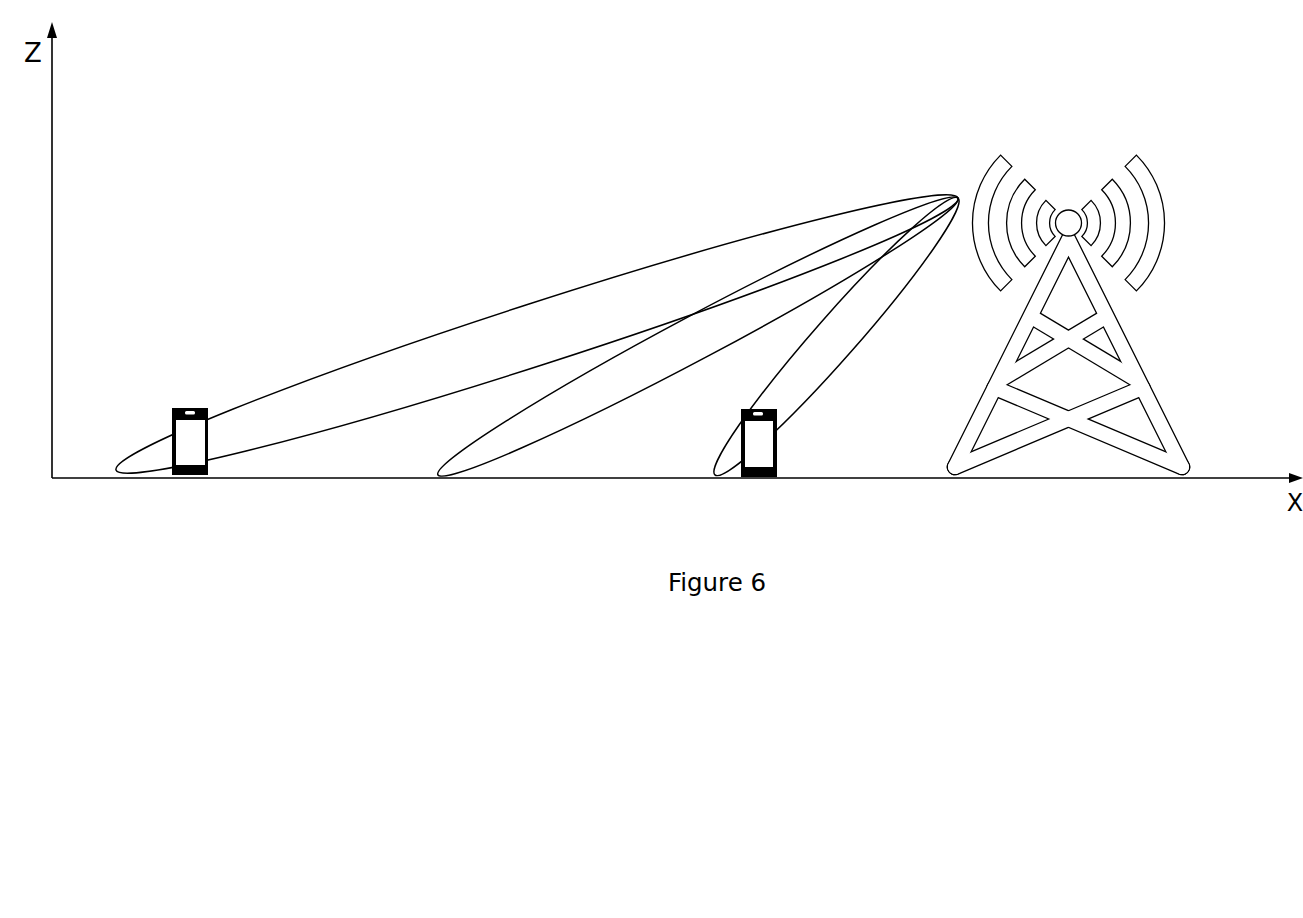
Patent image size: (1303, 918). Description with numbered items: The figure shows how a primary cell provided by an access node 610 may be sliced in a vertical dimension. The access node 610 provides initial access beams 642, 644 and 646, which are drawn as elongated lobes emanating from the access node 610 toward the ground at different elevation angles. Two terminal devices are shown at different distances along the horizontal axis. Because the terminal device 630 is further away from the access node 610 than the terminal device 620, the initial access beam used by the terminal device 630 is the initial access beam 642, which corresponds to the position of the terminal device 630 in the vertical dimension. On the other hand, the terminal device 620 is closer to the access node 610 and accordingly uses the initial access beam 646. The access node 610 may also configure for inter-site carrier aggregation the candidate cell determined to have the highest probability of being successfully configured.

The access node 610 is at (1068, 313).
The terminal device 620 is at (756, 462).
The terminal device 630 is at (190, 463).
The initial access beam 642 is at (536, 334).
The initial access beam 644 is at (698, 336).
The initial access beam 646 is at (836, 336).